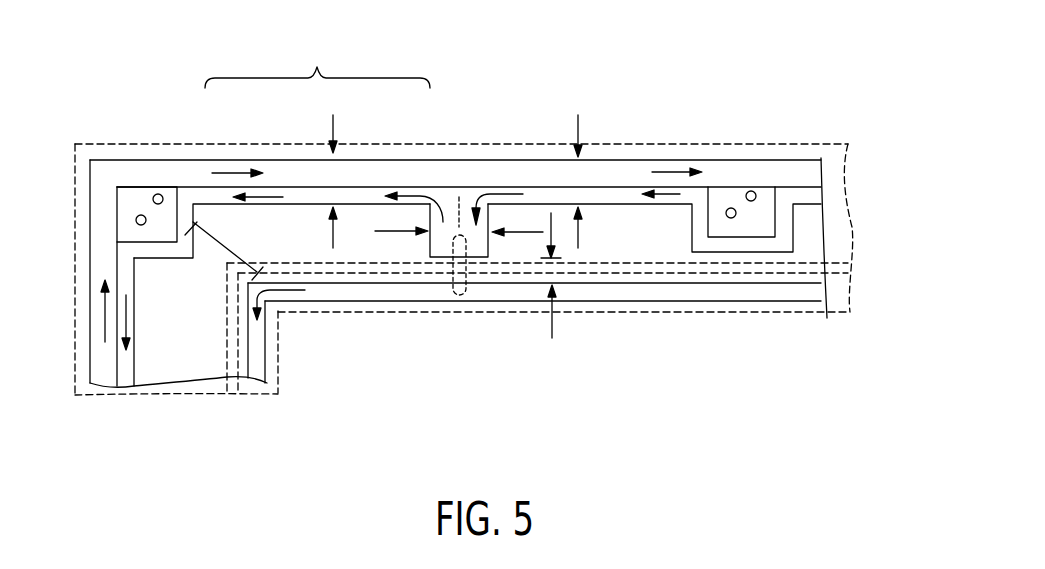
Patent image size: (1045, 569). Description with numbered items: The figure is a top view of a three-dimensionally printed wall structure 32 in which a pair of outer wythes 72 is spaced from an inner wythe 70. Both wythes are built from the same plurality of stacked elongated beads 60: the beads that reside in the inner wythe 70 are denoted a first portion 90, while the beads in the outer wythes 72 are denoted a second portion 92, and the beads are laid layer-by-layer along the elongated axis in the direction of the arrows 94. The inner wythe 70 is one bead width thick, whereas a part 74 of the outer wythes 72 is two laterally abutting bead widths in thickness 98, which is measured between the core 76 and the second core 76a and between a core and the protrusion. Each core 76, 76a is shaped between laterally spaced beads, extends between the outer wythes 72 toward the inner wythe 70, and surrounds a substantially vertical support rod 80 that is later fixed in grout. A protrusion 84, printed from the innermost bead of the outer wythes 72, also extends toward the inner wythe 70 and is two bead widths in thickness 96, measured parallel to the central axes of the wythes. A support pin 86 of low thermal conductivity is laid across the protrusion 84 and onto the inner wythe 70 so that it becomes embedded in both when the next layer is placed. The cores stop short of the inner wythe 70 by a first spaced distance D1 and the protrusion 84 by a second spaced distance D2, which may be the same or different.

The wall structure 32 is at (486, 212).
The elongated beads 60 is at (173, 319).
The inner wythe 70 is at (587, 315).
The outer wythes 72 is at (508, 220).
The part of the outer wythes 74 is at (317, 61).
The core 76 is at (229, 211).
The second core 76a is at (654, 288).
The support rod 80 is at (421, 148).
The protrusion 84 is at (479, 290).
The support pin 86 is at (418, 299).
The first portion 90 is at (539, 329).
The second portion 92 is at (885, 228).
The arrows 94 is at (365, 224).
The thickness of protrusion 96 is at (440, 295).
The thickness of part of outer wythes 98 is at (485, 129).
The first spaced distance D1 is at (238, 250).
The second spaced distance D2 is at (579, 286).